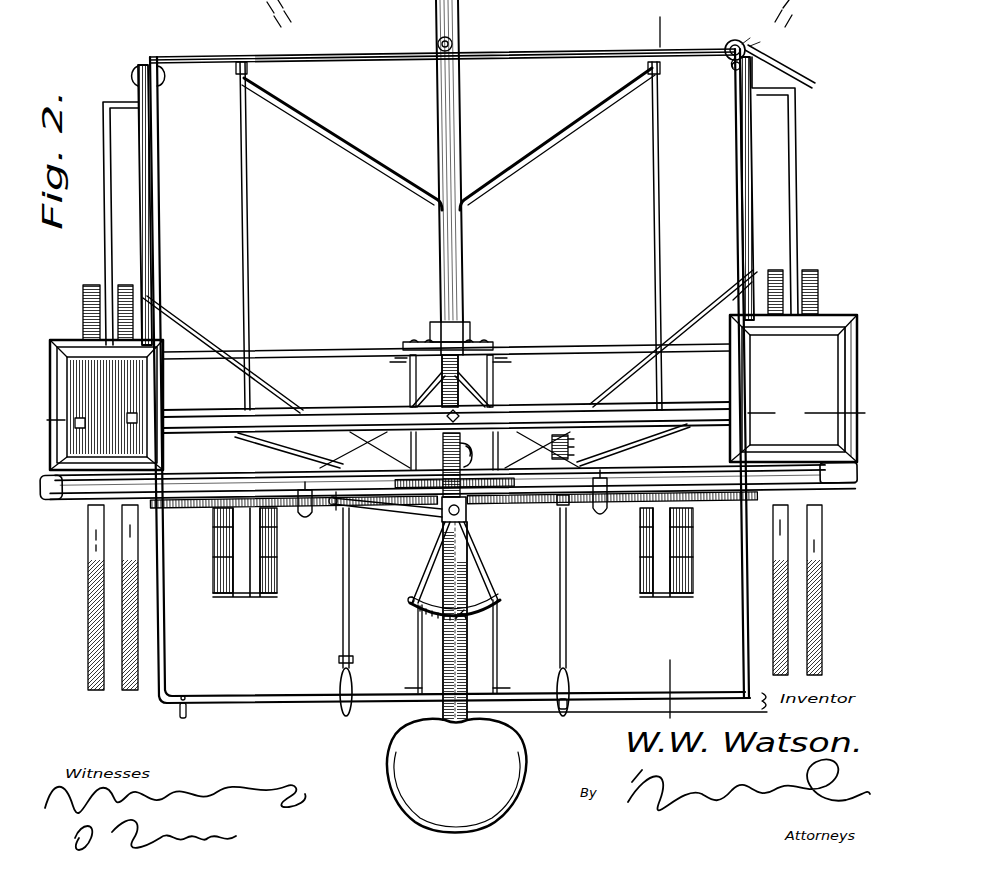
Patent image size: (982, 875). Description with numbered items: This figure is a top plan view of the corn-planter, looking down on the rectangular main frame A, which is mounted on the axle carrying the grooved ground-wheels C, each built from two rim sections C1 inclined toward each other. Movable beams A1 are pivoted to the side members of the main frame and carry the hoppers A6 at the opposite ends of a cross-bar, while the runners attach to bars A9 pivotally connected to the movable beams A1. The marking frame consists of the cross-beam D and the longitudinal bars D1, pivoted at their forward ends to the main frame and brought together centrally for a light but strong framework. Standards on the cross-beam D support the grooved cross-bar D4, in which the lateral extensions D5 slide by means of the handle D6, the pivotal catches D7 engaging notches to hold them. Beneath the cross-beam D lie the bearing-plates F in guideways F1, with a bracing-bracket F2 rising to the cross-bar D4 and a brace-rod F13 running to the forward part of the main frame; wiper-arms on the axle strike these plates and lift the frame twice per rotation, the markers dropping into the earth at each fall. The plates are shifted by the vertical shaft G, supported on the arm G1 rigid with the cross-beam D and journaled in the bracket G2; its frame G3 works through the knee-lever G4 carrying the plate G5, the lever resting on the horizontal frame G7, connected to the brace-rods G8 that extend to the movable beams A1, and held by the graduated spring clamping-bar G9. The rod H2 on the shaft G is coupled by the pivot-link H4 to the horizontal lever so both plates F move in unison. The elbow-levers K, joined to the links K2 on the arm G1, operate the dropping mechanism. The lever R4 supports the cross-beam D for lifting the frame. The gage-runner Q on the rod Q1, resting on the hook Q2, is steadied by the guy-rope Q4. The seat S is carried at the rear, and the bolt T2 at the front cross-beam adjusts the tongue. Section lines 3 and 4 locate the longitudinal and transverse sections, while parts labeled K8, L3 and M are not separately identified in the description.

The main frame A is at (158, 175).
The movable beams A1 is at (132, 165).
The bar A9 is at (97, 177).
The hoppers A6 is at (453, 392).
The ground-wheels C is at (443, 597).
The wheel sections C1 is at (90, 292).
The cross-beam D is at (200, 506).
The longitudinal bars D1 is at (378, 167).
The cross-bar D4 is at (213, 440).
The extensions D5 is at (62, 495).
The handle D6 is at (306, 510).
The pivotal catches D7 is at (565, 504).
The bearing-plates F is at (215, 548).
The guideways F1 is at (277, 565).
The bracing-bracket F2 is at (250, 592).
The vertical posts F13 is at (232, 222).
The vertical shaft G is at (400, 590).
The arm G1 is at (466, 462).
The bracket G2 is at (448, 510).
The frame G3 is at (482, 573).
The lever G4 is at (468, 655).
The plate G5 is at (443, 630).
The horizontal frame G7 is at (440, 518).
The brace-rods G8 is at (185, 334).
The spring clamping-bar G9 is at (470, 618).
The rod H2 is at (370, 510).
The pivot-link H4 is at (334, 506).
The elbow-levers K is at (376, 437).
The links K2 is at (443, 455).
The block K8 is at (560, 435).
The rod with paddle L3 is at (343, 580).
The upper cross beam M is at (345, 355).
The gage-runner Q is at (734, 39).
The rod Q1 is at (570, 708).
The hook Q2 is at (188, 712).
The guy-rope Q4 is at (800, 80).
The lever R4 is at (566, 588).
The seat S is at (456, 776).
The bolt T2 is at (437, 46).
The section line 3 3 is at (663, 368).
The section line 4 4 is at (449, 416).